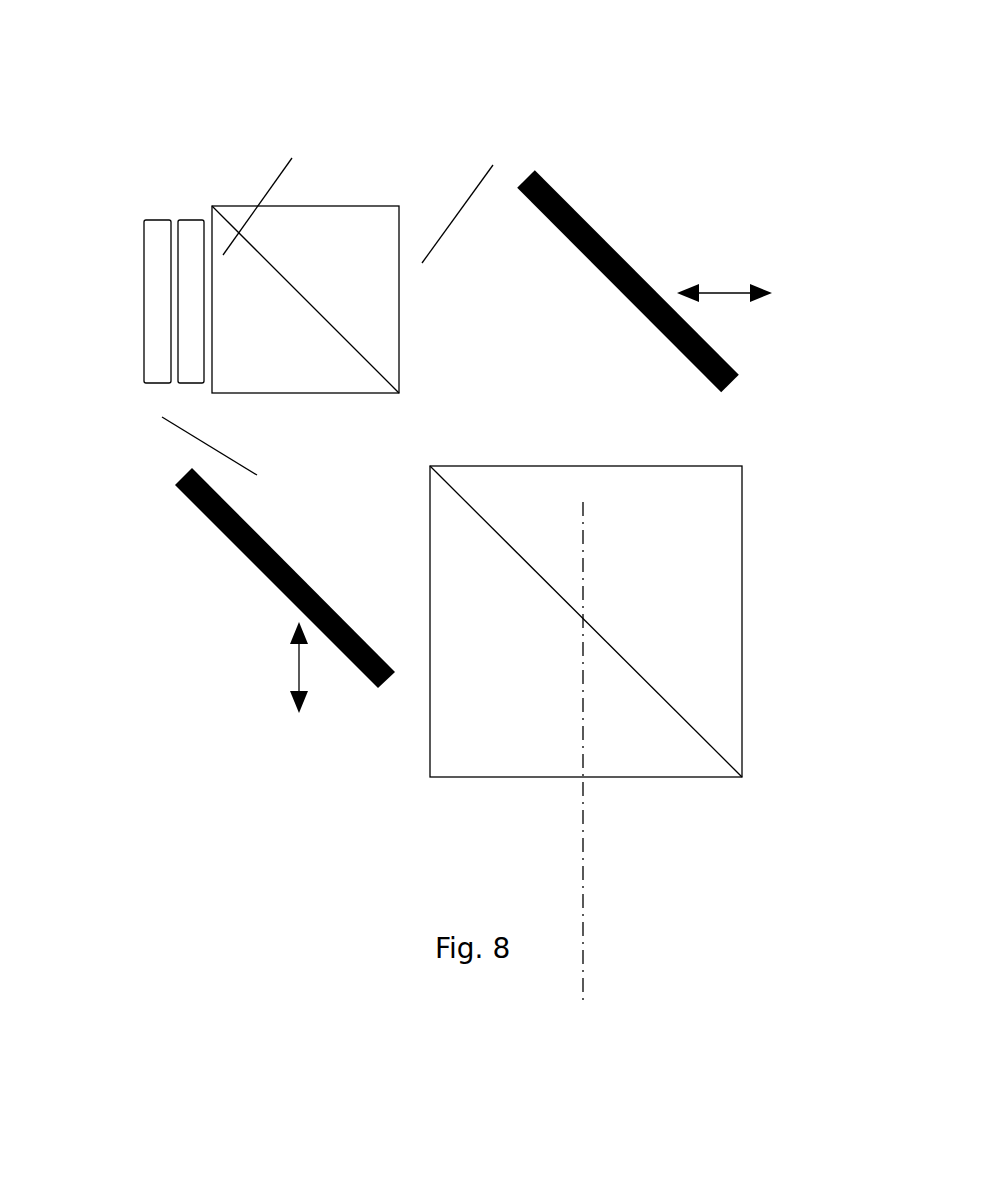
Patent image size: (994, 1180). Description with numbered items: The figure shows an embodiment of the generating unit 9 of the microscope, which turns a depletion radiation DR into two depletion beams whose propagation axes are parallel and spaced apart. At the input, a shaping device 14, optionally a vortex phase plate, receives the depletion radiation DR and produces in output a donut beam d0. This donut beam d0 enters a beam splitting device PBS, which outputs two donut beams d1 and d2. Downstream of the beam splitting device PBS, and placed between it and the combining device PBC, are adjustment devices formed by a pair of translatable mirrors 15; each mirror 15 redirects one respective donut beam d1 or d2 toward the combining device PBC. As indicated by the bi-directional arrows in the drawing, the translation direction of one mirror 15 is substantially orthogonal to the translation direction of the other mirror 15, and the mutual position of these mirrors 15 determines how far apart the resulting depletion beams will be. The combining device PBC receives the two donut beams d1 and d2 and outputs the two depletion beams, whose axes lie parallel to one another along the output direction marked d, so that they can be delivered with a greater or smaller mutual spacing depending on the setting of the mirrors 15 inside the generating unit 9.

The generating unit 9 is at (650, 130).
The shaping device 14 is at (192, 210).
The translatable mirror 15 is at (630, 263).
The depletion radiation DR is at (164, 288).
The beam splitting device PBS is at (302, 204).
The combining device PBC is at (742, 549).
The donut beam d0 is at (264, 187).
The donut beam d1 is at (463, 195).
The donut beam d2 is at (188, 431).
The combined output beam axis d is at (598, 752).